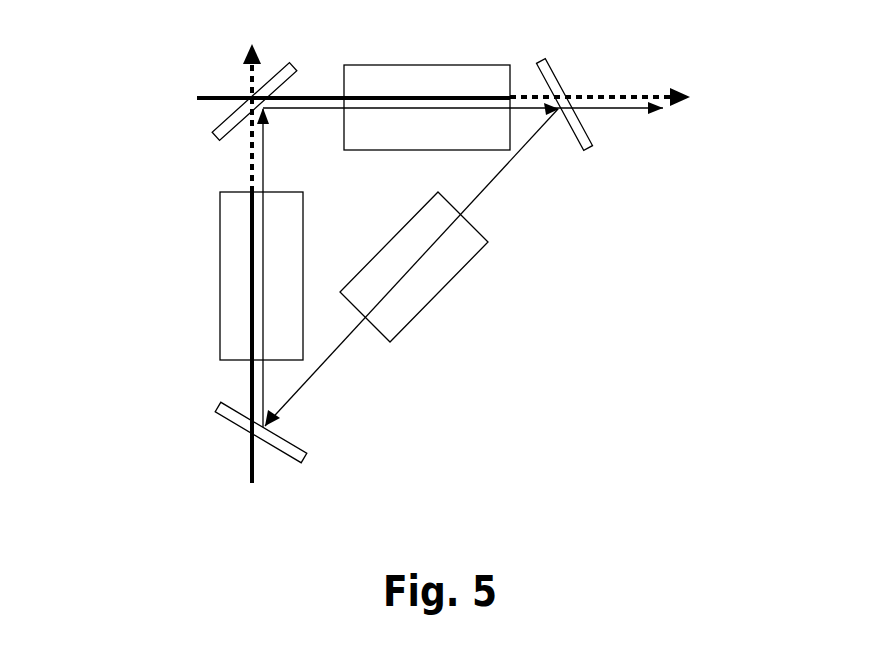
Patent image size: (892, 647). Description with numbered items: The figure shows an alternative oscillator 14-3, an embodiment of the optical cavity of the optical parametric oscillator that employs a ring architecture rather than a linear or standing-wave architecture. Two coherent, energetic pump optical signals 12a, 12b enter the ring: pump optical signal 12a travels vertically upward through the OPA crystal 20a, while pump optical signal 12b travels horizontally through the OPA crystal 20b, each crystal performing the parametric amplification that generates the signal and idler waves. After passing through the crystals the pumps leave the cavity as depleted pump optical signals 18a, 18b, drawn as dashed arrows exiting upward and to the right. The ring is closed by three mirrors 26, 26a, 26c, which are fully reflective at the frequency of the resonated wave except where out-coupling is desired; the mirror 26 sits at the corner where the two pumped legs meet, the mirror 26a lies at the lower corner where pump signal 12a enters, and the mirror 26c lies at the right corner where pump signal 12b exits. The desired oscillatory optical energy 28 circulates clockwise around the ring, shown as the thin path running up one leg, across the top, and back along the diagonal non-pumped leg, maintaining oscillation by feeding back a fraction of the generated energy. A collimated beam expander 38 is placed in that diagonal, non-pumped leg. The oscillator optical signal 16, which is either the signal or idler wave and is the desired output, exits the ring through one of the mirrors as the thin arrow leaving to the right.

The energetic pump optical signal 12a is at (248, 467).
The energetic pump optical signal 12b is at (210, 97).
The depleted pump optical signal 18a is at (250, 44).
The depleted pump optical signal 18b is at (673, 88).
The oscillator optical signal 16 is at (633, 110).
The oscillatory optical energy 28 is at (530, 146).
The OPA crystal 20a is at (220, 275).
The OPA crystal 20b is at (427, 65).
The collimated beam expander 38 is at (438, 293).
The internal mirror 26 is at (223, 137).
The mirror 26a is at (218, 405).
The mirror 26c is at (543, 62).
The oscillator 14-3 is at (584, 424).